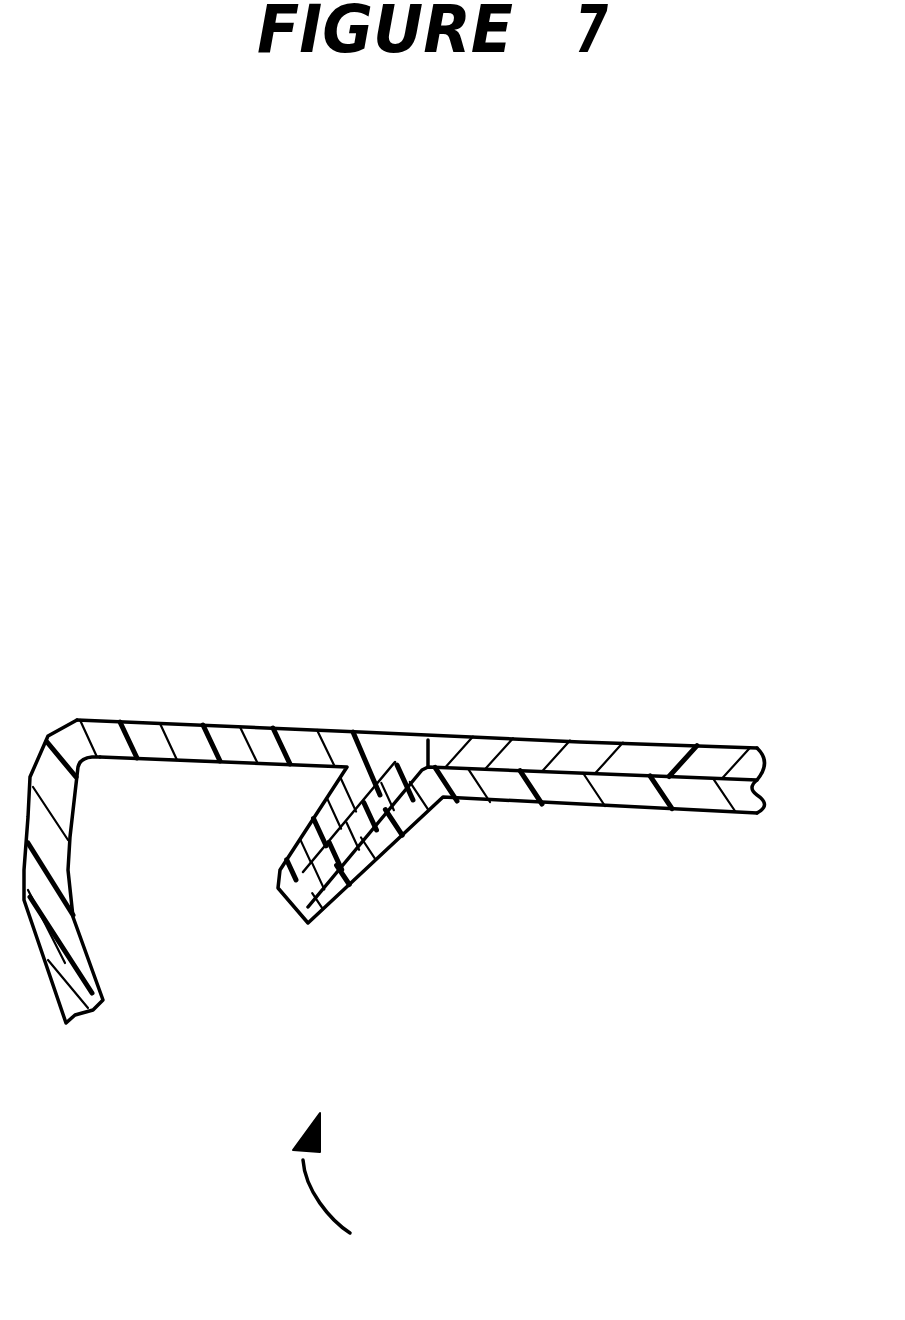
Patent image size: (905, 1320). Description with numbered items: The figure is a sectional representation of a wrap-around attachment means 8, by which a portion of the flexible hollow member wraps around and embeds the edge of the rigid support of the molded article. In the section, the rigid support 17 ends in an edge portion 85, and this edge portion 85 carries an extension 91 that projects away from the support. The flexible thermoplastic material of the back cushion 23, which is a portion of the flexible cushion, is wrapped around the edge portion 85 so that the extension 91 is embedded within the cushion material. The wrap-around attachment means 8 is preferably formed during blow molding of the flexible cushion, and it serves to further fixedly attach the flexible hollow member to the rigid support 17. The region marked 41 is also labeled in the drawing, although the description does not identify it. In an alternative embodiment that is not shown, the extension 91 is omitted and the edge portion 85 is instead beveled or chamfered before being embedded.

The rigid support 17 is at (597, 745).
The back cushion 23 is at (227, 722).
The edge portion 85 is at (440, 732).
The extension 91 is at (373, 840).
The fold region 41 is at (562, 997).
The wrap-around attachment means 8 is at (357, 1198).